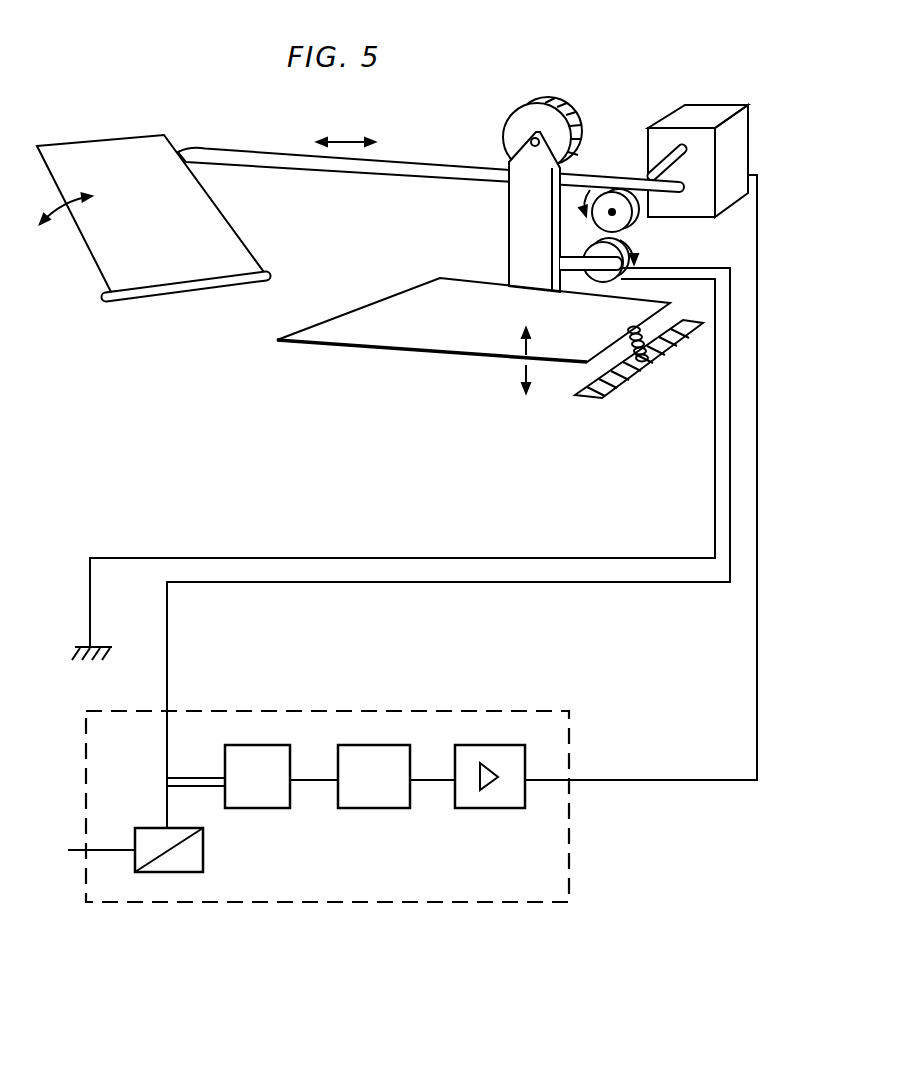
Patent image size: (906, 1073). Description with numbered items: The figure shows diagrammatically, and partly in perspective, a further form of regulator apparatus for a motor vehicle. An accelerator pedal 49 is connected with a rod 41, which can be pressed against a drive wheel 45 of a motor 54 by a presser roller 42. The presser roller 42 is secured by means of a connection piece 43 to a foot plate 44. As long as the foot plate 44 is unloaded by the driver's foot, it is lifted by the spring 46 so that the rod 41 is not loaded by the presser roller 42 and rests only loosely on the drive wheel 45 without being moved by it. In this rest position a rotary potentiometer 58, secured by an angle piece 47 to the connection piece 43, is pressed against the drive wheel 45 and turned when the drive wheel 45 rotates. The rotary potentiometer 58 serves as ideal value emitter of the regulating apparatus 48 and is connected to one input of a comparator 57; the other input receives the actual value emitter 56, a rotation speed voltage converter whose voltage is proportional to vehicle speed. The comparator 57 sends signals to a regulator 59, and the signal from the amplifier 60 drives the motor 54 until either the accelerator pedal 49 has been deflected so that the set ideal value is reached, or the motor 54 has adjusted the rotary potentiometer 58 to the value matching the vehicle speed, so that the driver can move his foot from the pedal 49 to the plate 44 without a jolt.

The rod 41 is at (258, 149).
The presser roller 42 is at (560, 101).
The connection piece 43 is at (509, 213).
The foot plate 44 is at (464, 358).
The drive wheel 45 is at (597, 232).
The spring 46 is at (638, 332).
The angle piece 47 is at (562, 262).
The regulating apparatus 48 is at (253, 903).
The accelerator pedal 49 is at (107, 137).
The motor 54 is at (703, 105).
The actual value emitter 56 is at (203, 850).
The comparator 57 is at (265, 808).
The rotary potentiometer 58 is at (603, 282).
The regulator 59 is at (390, 808).
The amplifier 60 is at (507, 808).